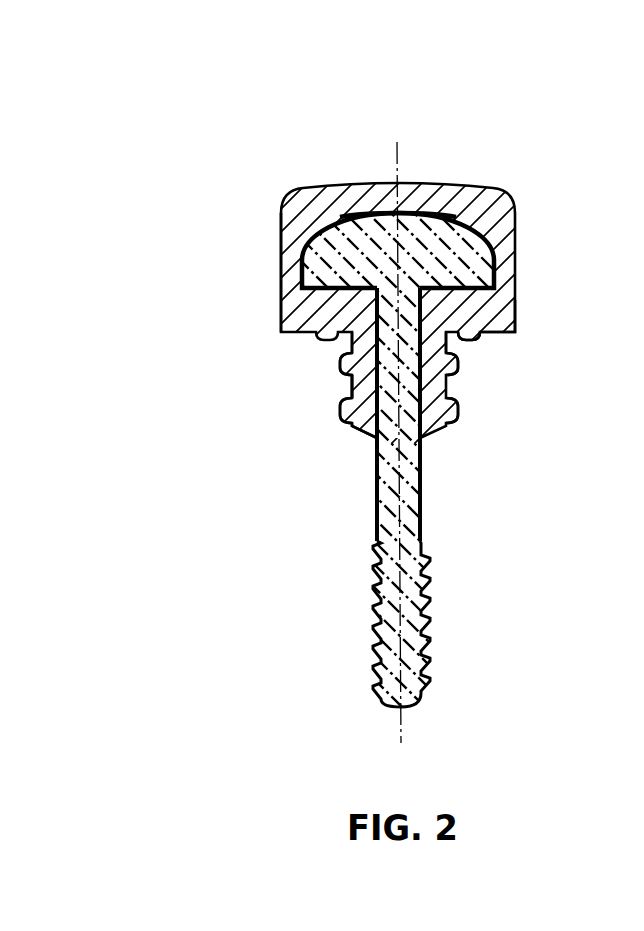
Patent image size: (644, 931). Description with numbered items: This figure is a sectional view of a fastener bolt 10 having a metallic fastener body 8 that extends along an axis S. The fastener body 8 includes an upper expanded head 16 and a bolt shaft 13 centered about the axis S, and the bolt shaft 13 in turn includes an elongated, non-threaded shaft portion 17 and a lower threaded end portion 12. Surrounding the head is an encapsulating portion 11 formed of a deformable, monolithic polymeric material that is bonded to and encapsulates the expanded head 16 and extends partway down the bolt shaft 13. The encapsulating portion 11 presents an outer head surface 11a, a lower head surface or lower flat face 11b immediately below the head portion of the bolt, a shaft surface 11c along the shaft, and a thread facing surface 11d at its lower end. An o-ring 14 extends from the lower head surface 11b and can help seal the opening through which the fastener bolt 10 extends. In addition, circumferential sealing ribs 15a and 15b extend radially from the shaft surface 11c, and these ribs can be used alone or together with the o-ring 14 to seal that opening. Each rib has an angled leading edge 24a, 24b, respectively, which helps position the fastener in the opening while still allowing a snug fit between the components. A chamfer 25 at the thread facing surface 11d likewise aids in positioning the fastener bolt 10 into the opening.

The fastener body 8 is at (430, 210).
The fastener bolt 10 is at (526, 168).
The encapsulating portion 11 is at (507, 305).
The outer head surface 11a is at (283, 268).
The lower head surface 11b is at (507, 333).
The shaft surface 11c is at (350, 391).
The thread facing surface 11d is at (375, 440).
The lower threaded end portion 12 is at (428, 567).
The bolt shaft 13 is at (355, 398).
The o-ring 14 is at (467, 336).
The circumferential sealing rib 15a is at (455, 370).
The circumferential sealing rib 15b is at (459, 410).
The upper expanded head 16 is at (495, 255).
The non-threaded shaft portion 17 is at (422, 483).
The angled leading edge 24a is at (347, 374).
The angled leading edge 24b is at (340, 418).
The chamfer 25 is at (368, 430).
The axis S is at (396, 165).